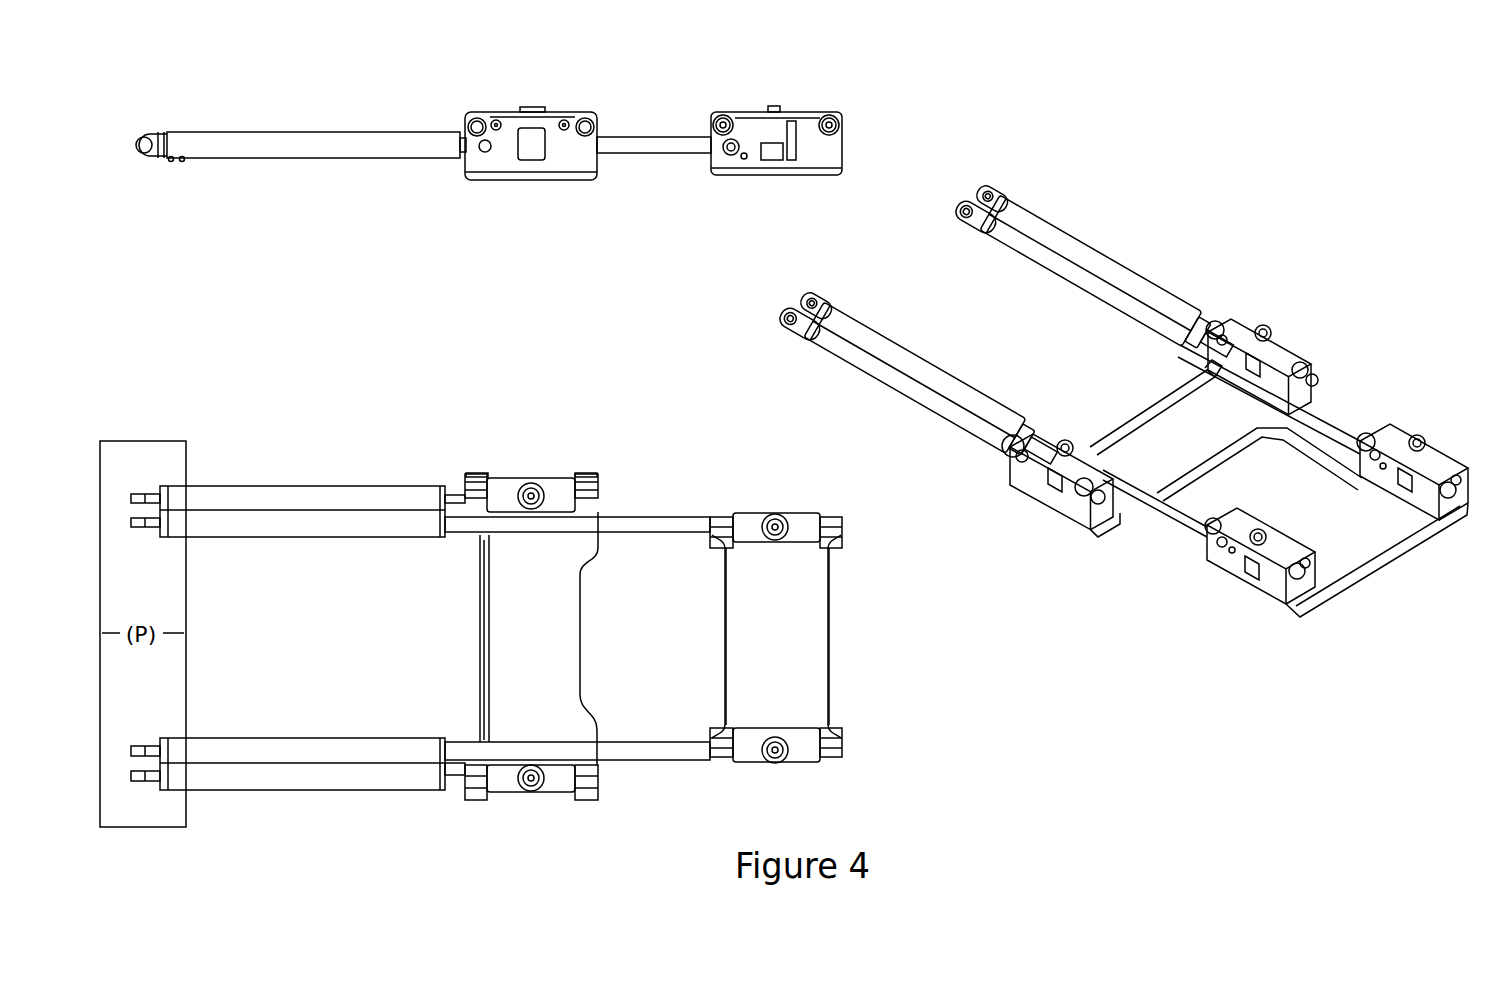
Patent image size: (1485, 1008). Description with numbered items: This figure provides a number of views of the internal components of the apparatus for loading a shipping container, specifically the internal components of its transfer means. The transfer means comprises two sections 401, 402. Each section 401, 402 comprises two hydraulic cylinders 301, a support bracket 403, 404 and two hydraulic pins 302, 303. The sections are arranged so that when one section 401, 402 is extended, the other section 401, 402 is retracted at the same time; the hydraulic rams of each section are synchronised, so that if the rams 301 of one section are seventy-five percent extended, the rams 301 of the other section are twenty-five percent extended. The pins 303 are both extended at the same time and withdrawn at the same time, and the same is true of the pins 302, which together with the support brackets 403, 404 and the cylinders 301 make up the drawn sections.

The hydraulic cylinder 301 is at (347, 520).
The hydraulic pin 302 is at (775, 108).
The hydraulic pin 303 is at (528, 110).
The section 401 is at (828, 646).
The section 402 is at (598, 700).
The support bracket 403 is at (803, 592).
The support bracket 404 is at (522, 636).